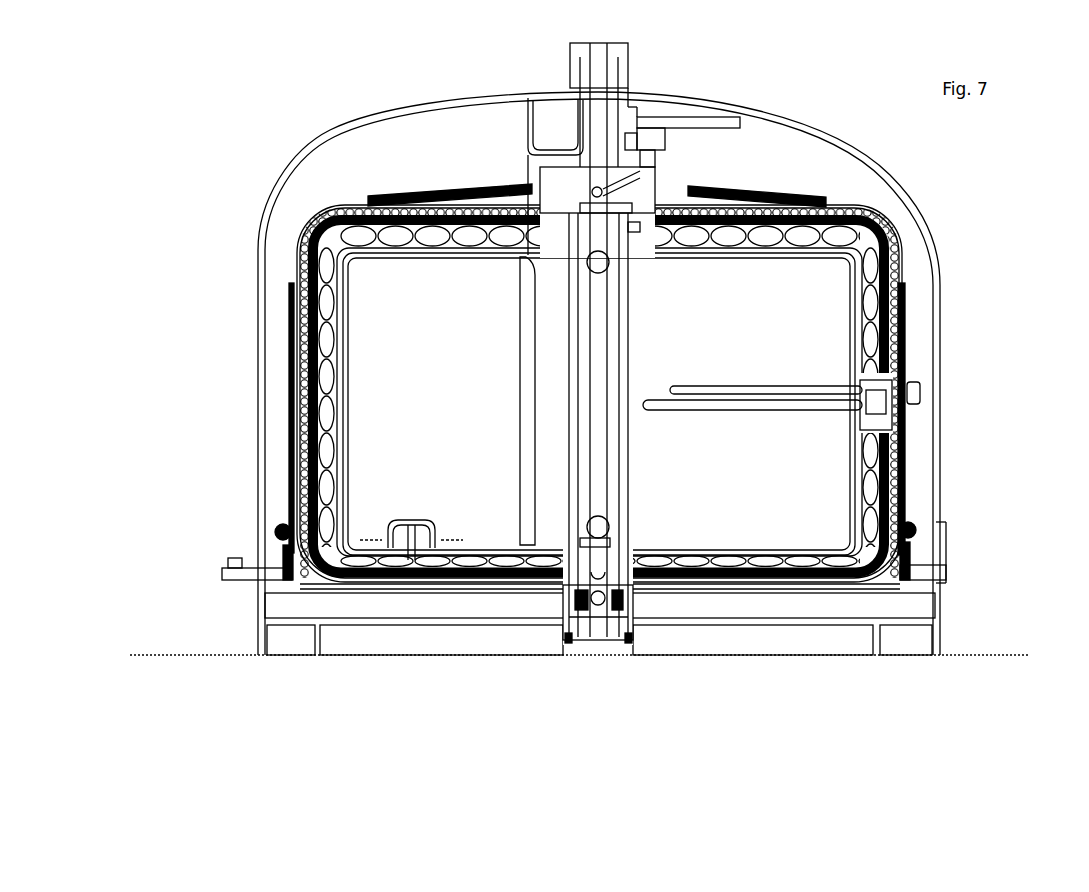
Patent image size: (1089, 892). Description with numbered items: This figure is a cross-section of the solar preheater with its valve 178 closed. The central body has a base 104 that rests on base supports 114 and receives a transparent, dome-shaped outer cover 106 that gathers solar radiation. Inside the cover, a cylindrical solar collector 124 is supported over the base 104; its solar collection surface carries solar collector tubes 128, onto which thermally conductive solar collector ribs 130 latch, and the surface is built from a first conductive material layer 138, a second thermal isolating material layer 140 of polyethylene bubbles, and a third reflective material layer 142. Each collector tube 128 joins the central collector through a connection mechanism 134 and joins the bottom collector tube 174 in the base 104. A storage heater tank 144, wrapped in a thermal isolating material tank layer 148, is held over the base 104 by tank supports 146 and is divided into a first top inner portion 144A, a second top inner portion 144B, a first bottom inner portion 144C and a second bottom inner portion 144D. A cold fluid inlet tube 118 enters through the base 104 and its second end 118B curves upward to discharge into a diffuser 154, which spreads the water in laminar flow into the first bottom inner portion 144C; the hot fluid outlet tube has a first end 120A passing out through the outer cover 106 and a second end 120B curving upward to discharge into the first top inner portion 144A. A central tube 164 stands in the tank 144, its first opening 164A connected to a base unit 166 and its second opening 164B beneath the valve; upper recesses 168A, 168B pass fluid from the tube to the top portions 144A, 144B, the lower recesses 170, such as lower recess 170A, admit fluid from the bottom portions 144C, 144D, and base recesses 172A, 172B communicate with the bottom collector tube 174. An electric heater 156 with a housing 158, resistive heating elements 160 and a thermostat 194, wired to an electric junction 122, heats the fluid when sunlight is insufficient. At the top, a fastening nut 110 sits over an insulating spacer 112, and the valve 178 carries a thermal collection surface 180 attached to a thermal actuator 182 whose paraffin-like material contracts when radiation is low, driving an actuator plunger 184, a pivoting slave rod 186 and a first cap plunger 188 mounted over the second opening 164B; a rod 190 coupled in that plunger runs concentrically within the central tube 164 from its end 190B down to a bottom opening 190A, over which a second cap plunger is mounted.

The base 104 is at (257, 645).
The outer cover 106 is at (720, 110).
The fastening nut 110 is at (619, 50).
The spacer 112 is at (613, 106).
The base supports 114 is at (262, 656).
The cold fluid inlet tube 118 is at (220, 572).
The second end 118B is at (240, 565).
The first end 120A is at (422, 581).
The second end 120B is at (518, 292).
The electric junction 122 is at (912, 404).
The solar collector 124 is at (890, 274).
The solar collector tubes 128 is at (888, 243).
The solar collector ribs 130 is at (815, 195).
The connection mechanism 134 is at (282, 553).
The first conductive material layer 138 is at (292, 274).
The second thermal isolating material layer 140 is at (303, 305).
The third reflective material layer 142 is at (312, 332).
The storage heater tank 144 is at (580, 393).
The first top inner portion 144A is at (415, 296).
The second top inner portion 144B is at (760, 296).
The first bottom inner portion 144C is at (420, 487).
The second bottom inner portion 144D is at (735, 508).
The tank supports 146 is at (372, 583).
The thermal isolating material tank layer 148 is at (327, 387).
The diffuser 154 is at (435, 529).
The electric heater 156 is at (842, 377).
The housing 158 is at (880, 368).
The resistive heating elements 160 is at (828, 408).
The central tube 164 is at (626, 475).
The first opening 164A is at (620, 533).
The second opening 164B is at (572, 255).
The base unit 166 is at (598, 641).
The upper recess 168A is at (577, 212).
The upper recess 168B is at (630, 257).
The inner rod 170 is at (628, 530).
The lower recess 170A is at (568, 523).
The base recess 172A is at (570, 600).
The base recess 172B is at (617, 600).
The bottom collector tube 174 is at (275, 607).
The valve 178 is at (652, 114).
The thermal collection surface 180 is at (737, 121).
The thermal actuator 182 is at (653, 132).
The actuator plunger 184 is at (653, 165).
The pivoting slave rod 186 is at (615, 182).
The first cap plunger 188 is at (580, 200).
The rod 190 is at (601, 350).
The bottom opening 190A is at (613, 548).
The rod upper end 190B is at (612, 219).
The thermostat 194 is at (882, 403).